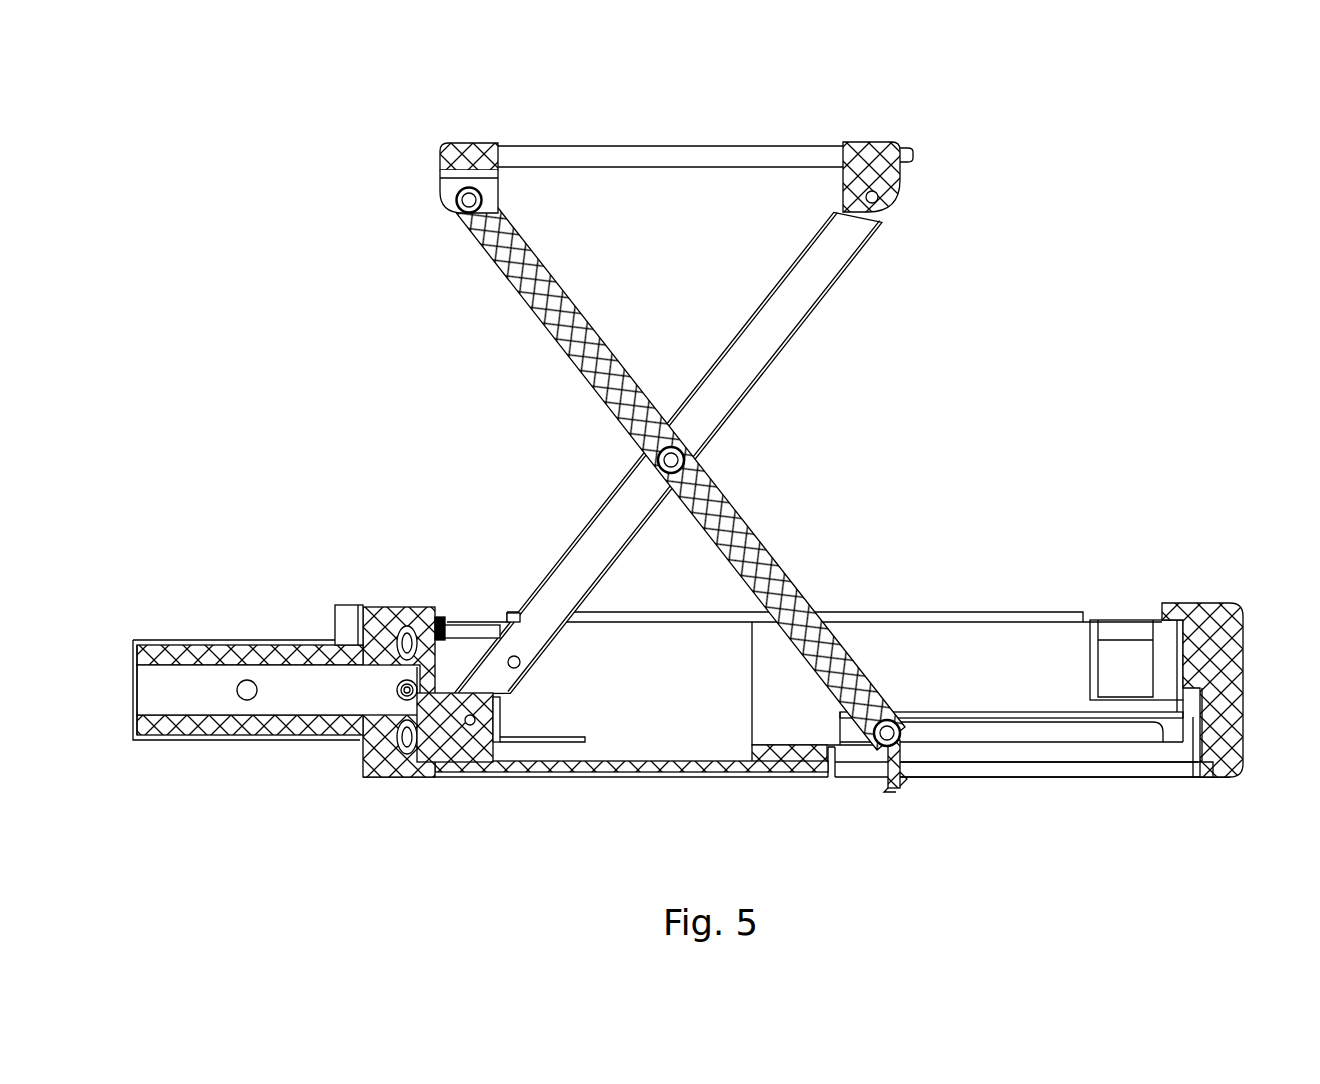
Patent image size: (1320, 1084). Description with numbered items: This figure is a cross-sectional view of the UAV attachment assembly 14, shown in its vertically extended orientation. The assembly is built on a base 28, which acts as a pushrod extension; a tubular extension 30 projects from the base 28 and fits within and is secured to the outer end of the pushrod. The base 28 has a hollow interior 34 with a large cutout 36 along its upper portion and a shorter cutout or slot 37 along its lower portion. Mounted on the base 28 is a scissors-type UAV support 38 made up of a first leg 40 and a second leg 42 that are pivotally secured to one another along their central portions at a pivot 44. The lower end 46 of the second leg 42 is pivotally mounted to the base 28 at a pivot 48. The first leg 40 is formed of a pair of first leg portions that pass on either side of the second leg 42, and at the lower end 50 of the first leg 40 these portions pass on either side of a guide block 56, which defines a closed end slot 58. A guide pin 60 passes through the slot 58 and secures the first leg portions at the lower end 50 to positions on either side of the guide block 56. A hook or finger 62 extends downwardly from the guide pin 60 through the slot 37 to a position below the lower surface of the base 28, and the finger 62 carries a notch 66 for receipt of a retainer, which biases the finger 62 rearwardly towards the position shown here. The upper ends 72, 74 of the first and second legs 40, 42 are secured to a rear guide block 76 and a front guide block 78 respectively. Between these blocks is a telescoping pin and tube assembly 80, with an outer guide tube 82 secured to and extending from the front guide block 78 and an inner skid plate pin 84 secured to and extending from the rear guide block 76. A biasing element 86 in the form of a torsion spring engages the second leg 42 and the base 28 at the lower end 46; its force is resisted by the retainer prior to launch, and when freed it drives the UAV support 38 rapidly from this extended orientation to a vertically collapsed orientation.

The UAV attachment assembly 14 is at (1092, 268).
The base 28 is at (628, 776).
The tubular extension 30 is at (235, 742).
The hollow interior 34 is at (967, 651).
The large cutout 36 is at (1025, 630).
The slot 37 is at (1032, 770).
The scissors-type UAV support 38 is at (740, 441).
The first leg 40 is at (583, 375).
The second leg 42 is at (810, 326).
The pivot 44 is at (656, 459).
The lower end of second leg 46 is at (530, 648).
The pivot 48 is at (478, 722).
The lower end of first leg 50 is at (858, 700).
The guide block 56 is at (1027, 712).
The closed end slot 58 is at (1065, 733).
The guide pin 60 is at (876, 750).
The finger 62 is at (885, 794).
The notch 66 is at (902, 788).
The upper end of first leg 72 is at (492, 205).
The upper end of second leg 74 is at (848, 232).
The rear guide block 76 is at (453, 152).
The front guide block 78 is at (901, 181).
The telescoping pin and tube assembly 80 is at (688, 135).
The outer guide tube 82 is at (650, 160).
The inner skid plate pin 84 is at (918, 148).
The biasing element 86 is at (585, 730).